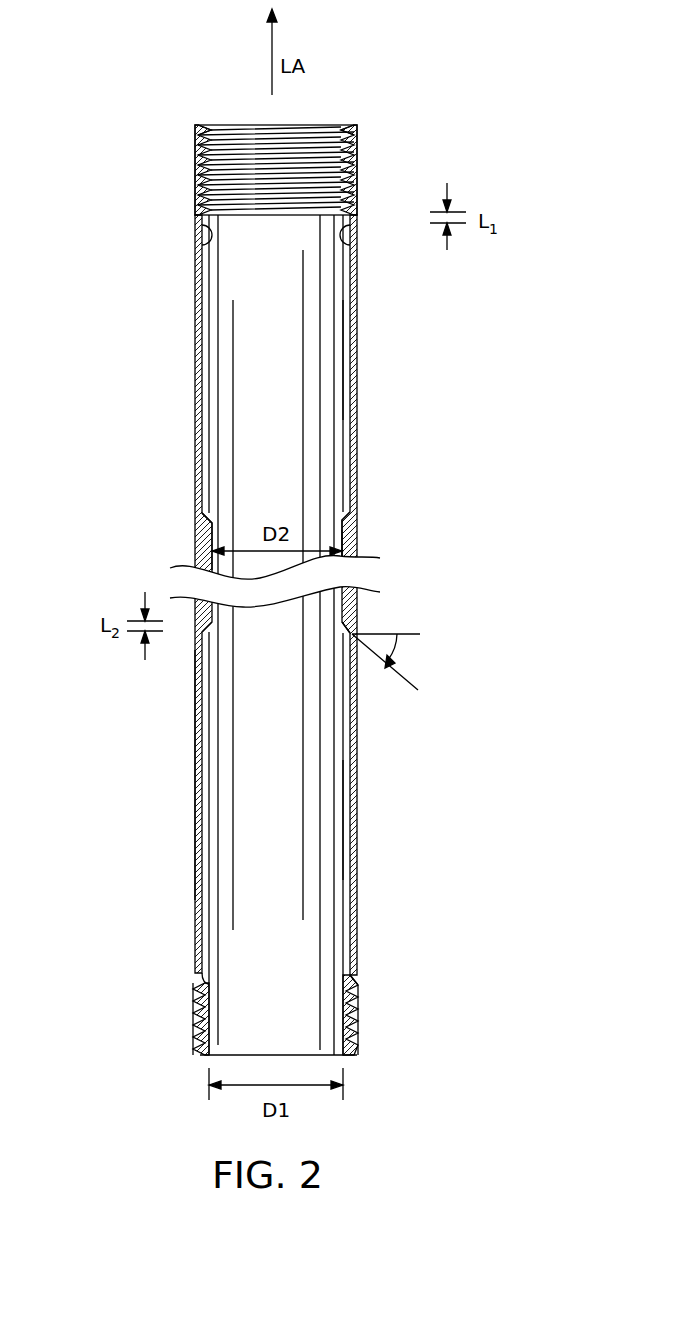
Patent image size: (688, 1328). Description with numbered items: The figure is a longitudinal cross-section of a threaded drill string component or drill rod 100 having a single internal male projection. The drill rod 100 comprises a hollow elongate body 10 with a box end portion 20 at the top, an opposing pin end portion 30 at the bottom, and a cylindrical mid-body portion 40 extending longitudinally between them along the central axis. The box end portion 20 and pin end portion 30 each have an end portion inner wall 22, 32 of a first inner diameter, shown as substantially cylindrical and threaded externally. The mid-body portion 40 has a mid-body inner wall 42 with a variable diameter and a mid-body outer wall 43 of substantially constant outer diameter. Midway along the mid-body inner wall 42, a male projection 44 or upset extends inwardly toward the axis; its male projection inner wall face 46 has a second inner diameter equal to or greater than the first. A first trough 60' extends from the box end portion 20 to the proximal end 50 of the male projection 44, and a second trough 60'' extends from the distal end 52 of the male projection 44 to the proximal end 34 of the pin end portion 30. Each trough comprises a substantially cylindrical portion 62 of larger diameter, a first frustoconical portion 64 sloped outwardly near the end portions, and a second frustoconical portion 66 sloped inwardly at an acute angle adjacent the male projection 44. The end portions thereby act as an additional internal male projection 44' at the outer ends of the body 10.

The hollow elongate body 10 is at (197, 968).
The box end portion 20 is at (357, 155).
The end portion inner wall 22 is at (345, 128).
The pin end portion 30 is at (358, 1022).
The end portion inner wall 32 is at (352, 1010).
The proximal end of the pin end portion 34 is at (352, 975).
The cylindrical mid-body portion 40 is at (358, 420).
The mid-body inner wall 42 is at (197, 378).
The mid-body outer wall 43 is at (355, 722).
The male projection 44 is at (373, 547).
The additional internal male projection 44' is at (180, 1019).
The male projection inner wall face 46 is at (200, 548).
The proximal end of the male projection 50 is at (342, 522).
The distal end of the male projection 52 is at (352, 633).
The first trough 60' is at (383, 360).
The second trough 60'' is at (382, 820).
The substantially cylindrical portion 62 is at (197, 797).
The first frustoconical portion 64 is at (205, 238).
The second frustoconical portion 66 is at (207, 522).
The drill rod 100 is at (134, 574).